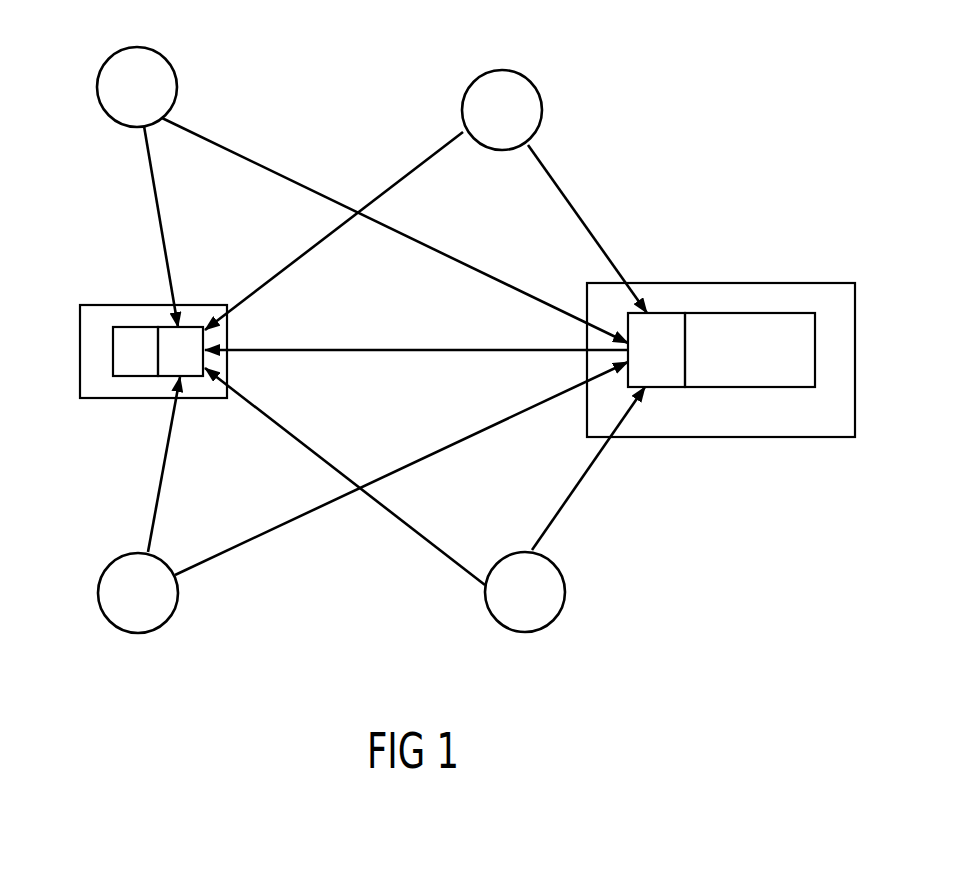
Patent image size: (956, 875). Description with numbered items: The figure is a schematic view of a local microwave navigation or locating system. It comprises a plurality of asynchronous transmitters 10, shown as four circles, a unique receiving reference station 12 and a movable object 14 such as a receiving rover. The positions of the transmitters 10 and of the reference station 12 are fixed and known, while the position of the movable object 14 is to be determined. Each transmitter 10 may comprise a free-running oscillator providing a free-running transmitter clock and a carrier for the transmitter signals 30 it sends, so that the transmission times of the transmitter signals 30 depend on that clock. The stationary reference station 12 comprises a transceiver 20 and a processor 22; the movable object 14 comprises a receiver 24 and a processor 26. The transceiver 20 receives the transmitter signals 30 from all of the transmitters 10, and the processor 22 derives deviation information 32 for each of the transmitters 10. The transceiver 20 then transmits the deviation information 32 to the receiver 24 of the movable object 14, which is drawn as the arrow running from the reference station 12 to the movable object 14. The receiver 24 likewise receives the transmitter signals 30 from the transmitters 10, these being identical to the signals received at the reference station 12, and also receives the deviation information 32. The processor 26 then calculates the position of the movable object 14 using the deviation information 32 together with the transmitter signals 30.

The asynchronous transmitters 10 is at (177, 84).
The receiving reference station 12 is at (695, 283).
The movable object 14 is at (93, 399).
The transceiver 20 is at (654, 375).
The processor 22 is at (770, 375).
The receiver 24 is at (193, 333).
The processor 26 is at (117, 332).
The transmitter signals 30 is at (160, 210).
The deviation information 32 is at (362, 348).